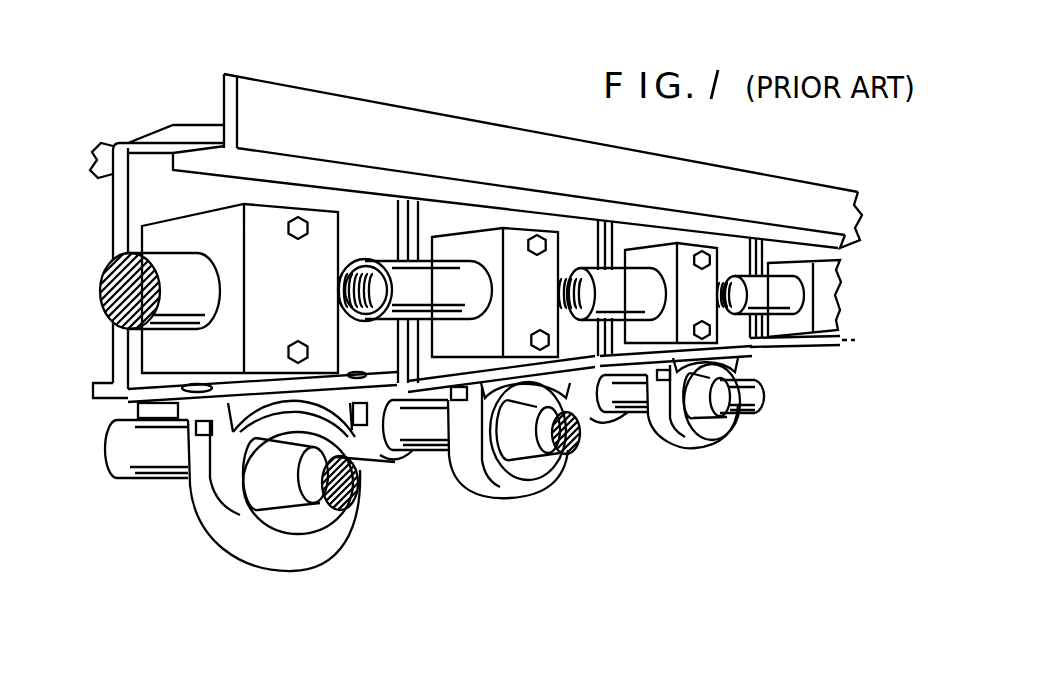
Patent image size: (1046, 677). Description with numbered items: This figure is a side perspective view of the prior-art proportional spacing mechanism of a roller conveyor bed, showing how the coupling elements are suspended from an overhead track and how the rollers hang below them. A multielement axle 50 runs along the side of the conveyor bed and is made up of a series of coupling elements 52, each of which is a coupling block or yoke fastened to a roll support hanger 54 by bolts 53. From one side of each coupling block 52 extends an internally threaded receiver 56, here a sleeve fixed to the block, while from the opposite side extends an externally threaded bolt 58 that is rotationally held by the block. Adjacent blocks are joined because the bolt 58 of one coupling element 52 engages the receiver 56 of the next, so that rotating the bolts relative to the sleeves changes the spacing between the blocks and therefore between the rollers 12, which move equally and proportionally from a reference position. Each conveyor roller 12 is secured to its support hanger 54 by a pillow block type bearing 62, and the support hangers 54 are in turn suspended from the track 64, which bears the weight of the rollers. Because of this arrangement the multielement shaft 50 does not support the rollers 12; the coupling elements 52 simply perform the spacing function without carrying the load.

The conveyor roller 12 is at (100, 507).
The multielement axle 50 is at (865, 335).
The coupling element 52 is at (310, 314).
The bolt 53 is at (298, 240).
The support hanger 54 is at (101, 146).
The internally threaded receiver 56 is at (163, 320).
The externally threaded bolt 58 is at (343, 318).
The pillow block type bearing 62 is at (293, 568).
The track 64 is at (317, 137).